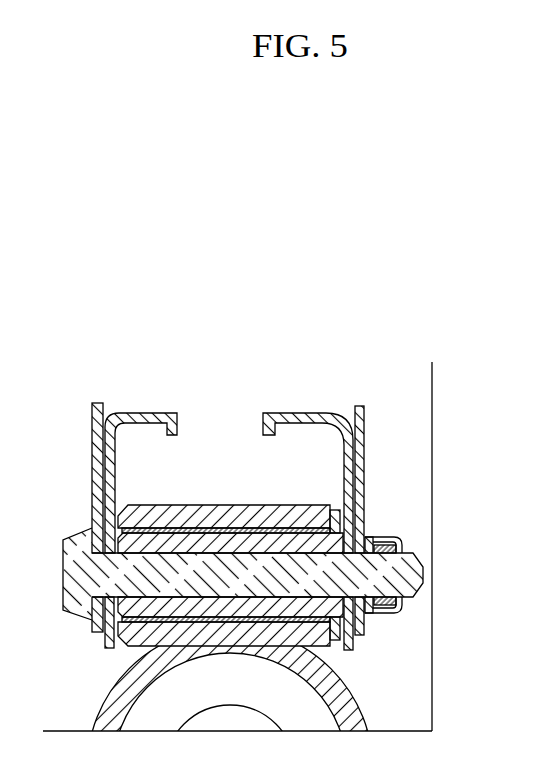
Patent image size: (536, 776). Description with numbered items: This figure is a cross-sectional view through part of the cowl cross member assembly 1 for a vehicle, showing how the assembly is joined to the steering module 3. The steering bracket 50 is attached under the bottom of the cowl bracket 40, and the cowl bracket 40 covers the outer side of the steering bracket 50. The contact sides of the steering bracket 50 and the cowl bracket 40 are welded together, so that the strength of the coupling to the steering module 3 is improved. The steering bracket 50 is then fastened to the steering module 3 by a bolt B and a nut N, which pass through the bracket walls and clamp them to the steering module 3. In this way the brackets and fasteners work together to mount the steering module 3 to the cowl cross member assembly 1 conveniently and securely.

The cowl cross member assembly 1 is at (227, 283).
The steering module 3 is at (345, 690).
The cowl bracket 40 is at (303, 418).
The steering bracket 50 is at (364, 443).
The bolt B is at (75, 578).
The nut N is at (397, 536).